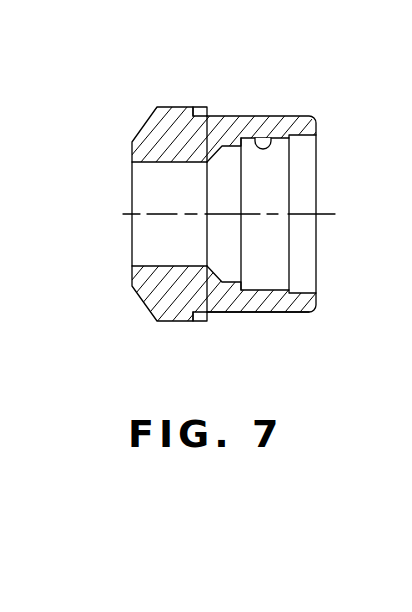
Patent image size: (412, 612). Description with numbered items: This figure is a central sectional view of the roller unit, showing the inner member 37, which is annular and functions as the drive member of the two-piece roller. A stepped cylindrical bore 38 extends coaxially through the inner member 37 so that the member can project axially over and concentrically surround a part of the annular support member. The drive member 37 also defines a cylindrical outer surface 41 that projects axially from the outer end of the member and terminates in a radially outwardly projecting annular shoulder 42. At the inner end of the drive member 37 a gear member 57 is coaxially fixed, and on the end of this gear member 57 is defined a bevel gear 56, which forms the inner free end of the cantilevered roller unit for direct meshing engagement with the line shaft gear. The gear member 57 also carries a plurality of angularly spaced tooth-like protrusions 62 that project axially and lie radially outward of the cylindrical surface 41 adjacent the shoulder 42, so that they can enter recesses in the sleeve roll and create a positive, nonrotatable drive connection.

The inner member 37 is at (259, 110).
The stepped cylindrical bore 38 is at (268, 138).
The cylindrical outer surface 41 is at (265, 312).
The annular shoulder 42 is at (200, 107).
The bevel gear 56 is at (150, 122).
The gear member 57 is at (172, 320).
The protrusions 62 is at (203, 326).